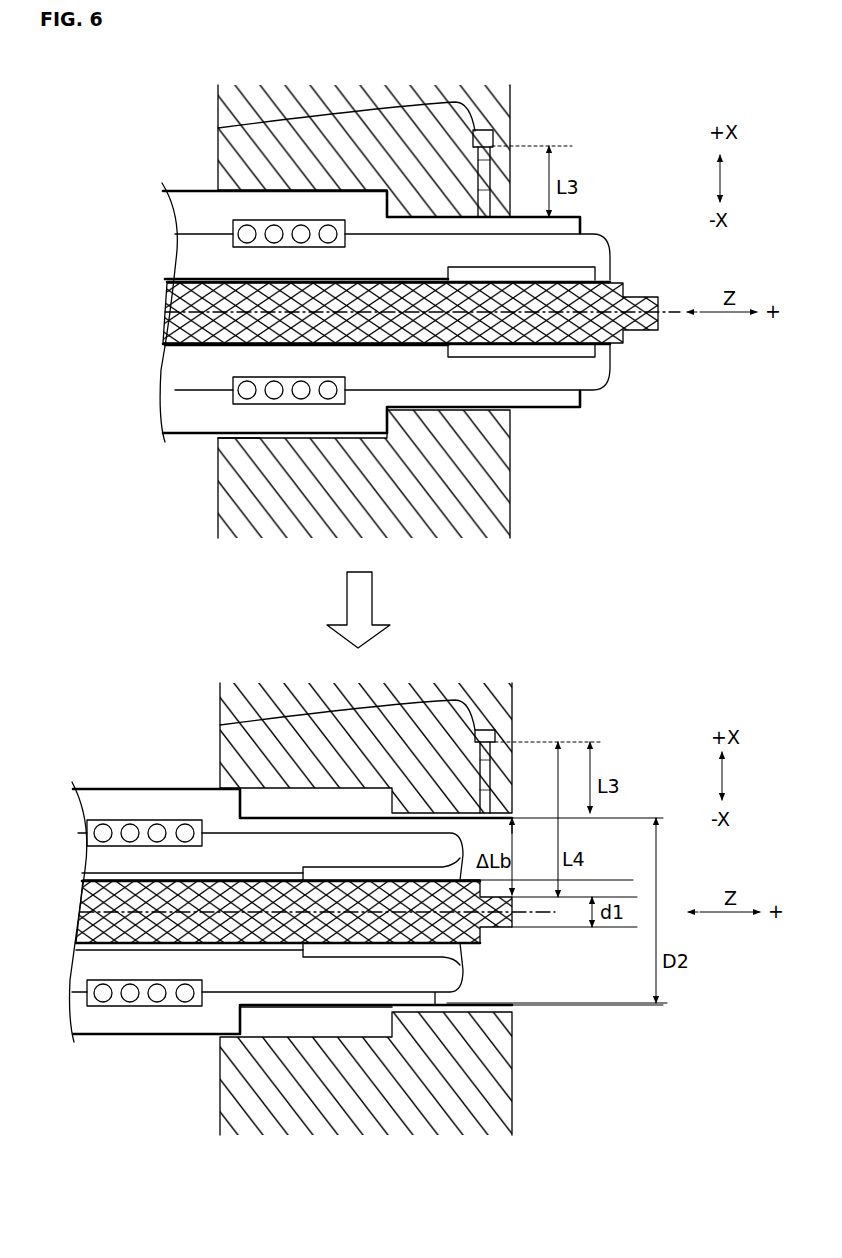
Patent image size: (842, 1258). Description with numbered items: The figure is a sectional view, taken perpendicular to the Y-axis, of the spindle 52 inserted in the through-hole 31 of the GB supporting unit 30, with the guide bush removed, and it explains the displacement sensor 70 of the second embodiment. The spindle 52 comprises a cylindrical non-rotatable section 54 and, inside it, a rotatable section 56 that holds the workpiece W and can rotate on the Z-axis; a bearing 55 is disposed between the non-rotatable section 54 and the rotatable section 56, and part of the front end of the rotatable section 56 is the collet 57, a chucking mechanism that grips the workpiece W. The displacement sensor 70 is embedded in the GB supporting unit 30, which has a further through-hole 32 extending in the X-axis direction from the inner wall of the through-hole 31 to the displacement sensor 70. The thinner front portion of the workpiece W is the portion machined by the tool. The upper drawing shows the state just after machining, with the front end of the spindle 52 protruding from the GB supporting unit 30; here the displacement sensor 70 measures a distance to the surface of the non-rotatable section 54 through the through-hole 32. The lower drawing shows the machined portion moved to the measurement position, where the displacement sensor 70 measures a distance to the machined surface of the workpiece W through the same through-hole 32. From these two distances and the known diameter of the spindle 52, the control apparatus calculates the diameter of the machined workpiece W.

The GB supporting unit 30 is at (510, 98).
The through-hole 31 is at (215, 438).
The through-hole 32 is at (498, 165).
The spindle 52 is at (214, 186).
The non-rotatable section 54 is at (178, 211).
The bearing 55 is at (250, 220).
The rotatable section 56 is at (195, 258).
The collet 57 is at (605, 251).
The displacement sensor 70 is at (493, 134).
The workpiece W is at (640, 298).